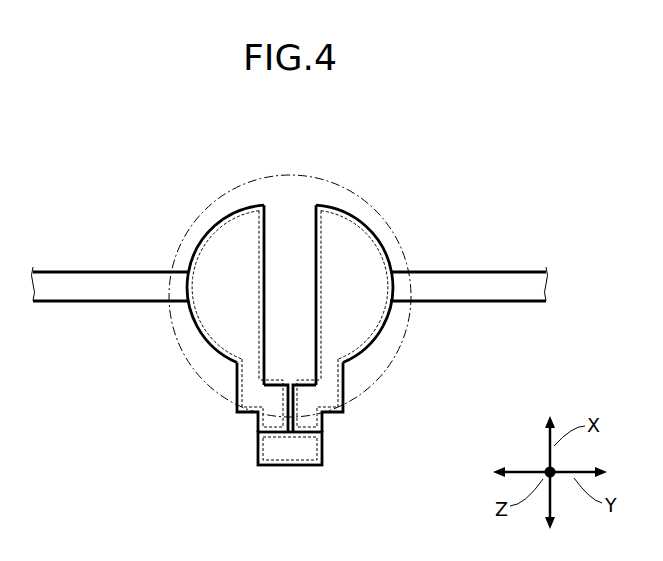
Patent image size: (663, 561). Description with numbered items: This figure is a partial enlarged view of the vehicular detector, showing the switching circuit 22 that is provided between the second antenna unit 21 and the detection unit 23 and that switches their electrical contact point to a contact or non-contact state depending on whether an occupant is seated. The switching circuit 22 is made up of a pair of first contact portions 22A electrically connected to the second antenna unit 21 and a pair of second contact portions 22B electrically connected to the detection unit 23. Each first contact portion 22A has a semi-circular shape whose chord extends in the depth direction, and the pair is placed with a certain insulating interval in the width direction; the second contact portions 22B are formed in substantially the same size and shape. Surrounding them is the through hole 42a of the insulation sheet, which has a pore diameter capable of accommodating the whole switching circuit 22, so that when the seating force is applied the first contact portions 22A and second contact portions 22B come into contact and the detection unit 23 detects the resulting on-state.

The second antenna unit 21 is at (62, 270).
The switching circuit 22 is at (290, 293).
The first contact portions 22A is at (208, 343).
The second contact portions 22B is at (223, 218).
The detection unit 23 is at (290, 468).
The through hole 42a is at (326, 186).